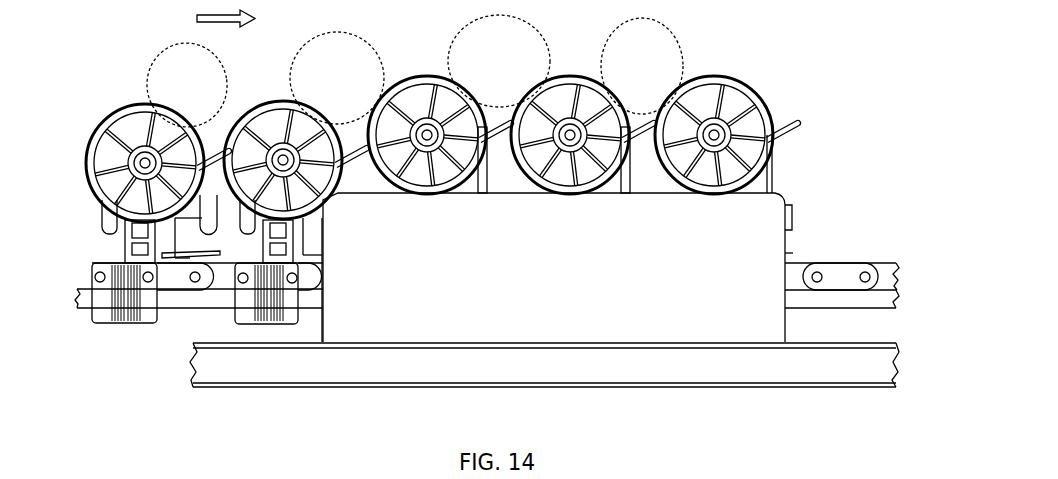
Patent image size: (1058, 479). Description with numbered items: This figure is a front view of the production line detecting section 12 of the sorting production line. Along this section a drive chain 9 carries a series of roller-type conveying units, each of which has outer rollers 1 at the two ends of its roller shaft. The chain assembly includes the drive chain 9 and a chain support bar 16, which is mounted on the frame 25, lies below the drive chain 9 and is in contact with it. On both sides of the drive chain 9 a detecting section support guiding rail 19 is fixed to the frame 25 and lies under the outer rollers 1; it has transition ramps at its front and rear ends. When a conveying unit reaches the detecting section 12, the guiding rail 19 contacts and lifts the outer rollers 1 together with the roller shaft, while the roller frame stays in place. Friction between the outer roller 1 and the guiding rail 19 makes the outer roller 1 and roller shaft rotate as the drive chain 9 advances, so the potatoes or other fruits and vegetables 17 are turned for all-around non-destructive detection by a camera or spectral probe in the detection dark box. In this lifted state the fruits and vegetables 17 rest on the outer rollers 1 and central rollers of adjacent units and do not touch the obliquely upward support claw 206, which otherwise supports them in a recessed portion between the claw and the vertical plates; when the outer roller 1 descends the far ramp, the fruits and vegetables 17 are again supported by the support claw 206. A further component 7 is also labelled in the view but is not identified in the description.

The outer roller 1 is at (278, 120).
The sliding block 7 is at (150, 310).
The drive chain 9 is at (852, 272).
The production line detecting section 12 is at (838, 80).
The chain support bar 16 is at (188, 302).
The fruits and vegetables 17 is at (524, 60).
The detecting section support guiding rail 19 is at (718, 305).
The frame 25 is at (678, 367).
The support claw 206 is at (794, 130).